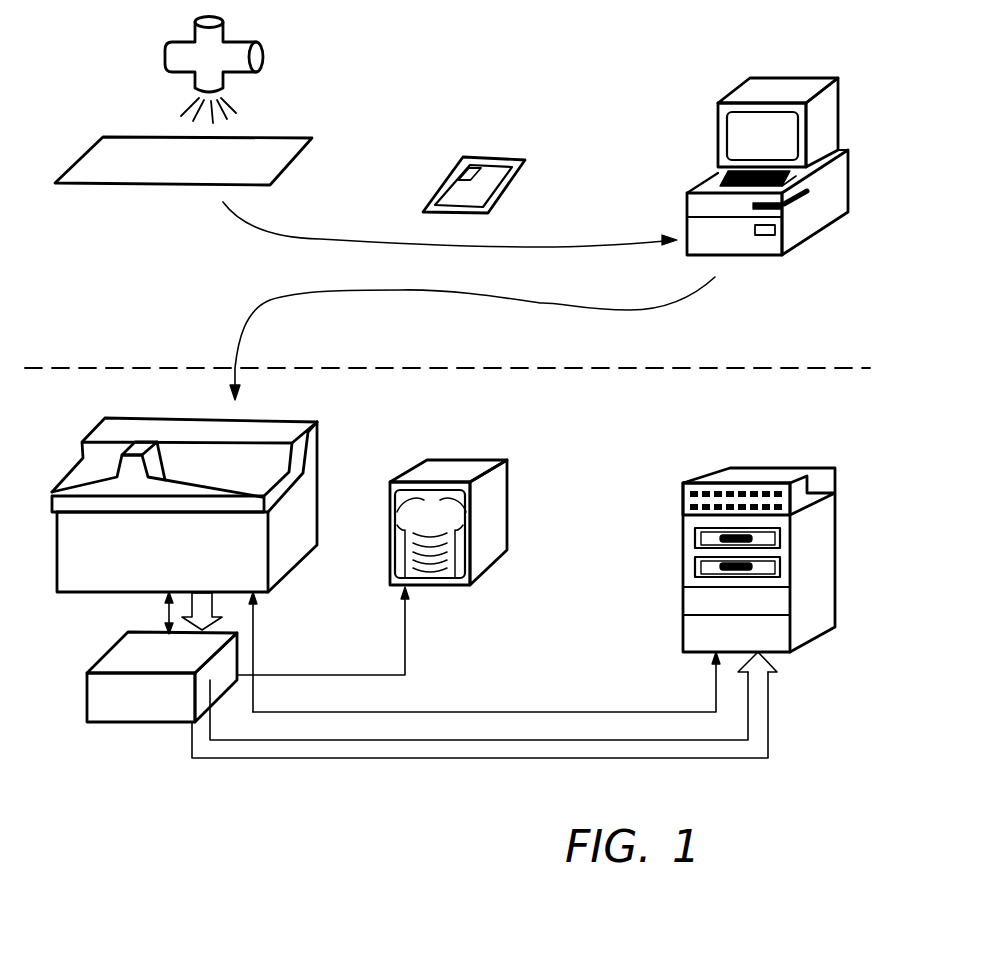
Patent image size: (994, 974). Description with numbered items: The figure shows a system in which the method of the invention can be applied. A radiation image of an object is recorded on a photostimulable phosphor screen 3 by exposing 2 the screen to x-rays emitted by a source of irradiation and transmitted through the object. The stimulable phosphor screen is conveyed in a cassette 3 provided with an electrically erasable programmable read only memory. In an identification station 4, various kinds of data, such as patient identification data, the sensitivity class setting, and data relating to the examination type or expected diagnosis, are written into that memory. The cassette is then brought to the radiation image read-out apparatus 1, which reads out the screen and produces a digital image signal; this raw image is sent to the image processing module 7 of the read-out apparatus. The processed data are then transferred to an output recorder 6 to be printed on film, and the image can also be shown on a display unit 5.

The radiation image read-out apparatus 1 is at (87, 457).
The exposing 2 is at (240, 43).
The photostimulable phosphor screen in cassette 3 is at (483, 170).
The identification station 4 is at (815, 220).
The image display device 5 is at (457, 472).
The image recording device / printer 6 is at (815, 623).
The image processing module 7 is at (223, 670).